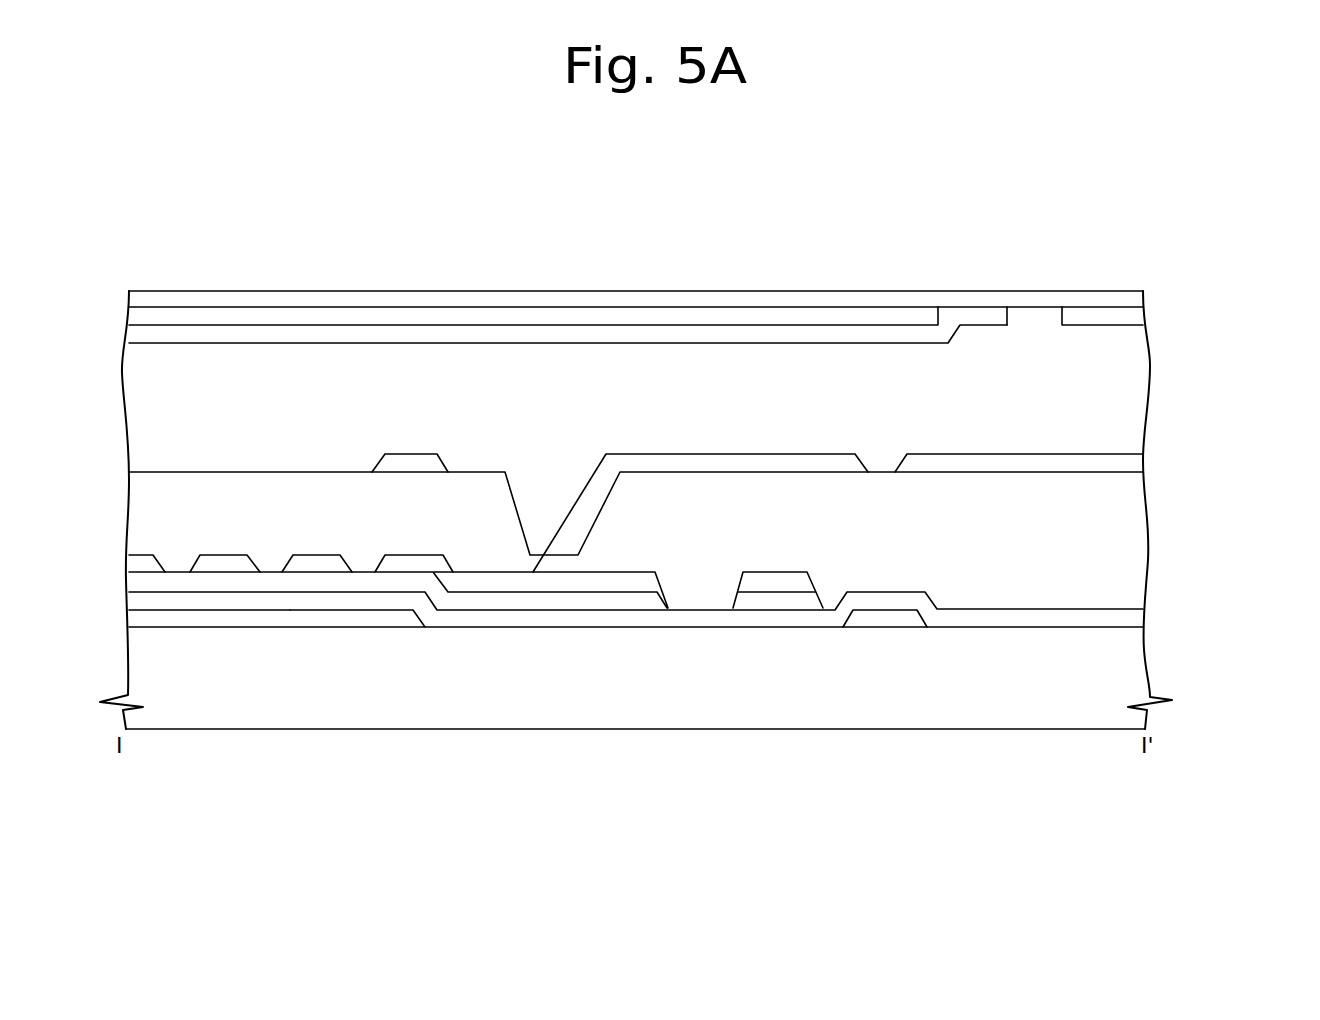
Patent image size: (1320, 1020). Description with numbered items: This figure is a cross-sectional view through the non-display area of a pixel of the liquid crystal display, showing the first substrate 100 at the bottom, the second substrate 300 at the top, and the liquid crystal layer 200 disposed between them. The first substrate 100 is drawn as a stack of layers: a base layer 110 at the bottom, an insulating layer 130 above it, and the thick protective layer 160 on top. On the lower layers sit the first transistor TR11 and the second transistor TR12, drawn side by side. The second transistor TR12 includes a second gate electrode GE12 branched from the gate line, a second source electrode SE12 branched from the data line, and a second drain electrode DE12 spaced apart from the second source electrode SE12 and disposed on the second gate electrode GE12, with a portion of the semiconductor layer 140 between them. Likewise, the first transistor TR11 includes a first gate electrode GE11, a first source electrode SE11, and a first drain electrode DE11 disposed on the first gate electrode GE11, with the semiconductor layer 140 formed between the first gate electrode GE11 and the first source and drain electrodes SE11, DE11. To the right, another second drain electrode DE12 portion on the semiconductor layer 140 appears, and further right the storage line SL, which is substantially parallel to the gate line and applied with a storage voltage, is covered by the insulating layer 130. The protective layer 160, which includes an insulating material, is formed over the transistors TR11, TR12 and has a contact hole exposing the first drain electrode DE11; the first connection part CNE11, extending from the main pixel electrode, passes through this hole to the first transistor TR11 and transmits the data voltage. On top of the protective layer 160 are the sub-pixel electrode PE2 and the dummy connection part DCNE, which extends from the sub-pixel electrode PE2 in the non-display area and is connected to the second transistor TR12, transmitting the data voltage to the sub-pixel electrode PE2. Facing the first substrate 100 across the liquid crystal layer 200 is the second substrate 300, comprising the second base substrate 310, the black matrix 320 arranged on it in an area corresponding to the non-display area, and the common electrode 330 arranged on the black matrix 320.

The second base substrate 310 is at (1128, 300).
The black matrix 320 is at (1128, 317).
The common electrode 330 is at (943, 333).
The second substrate 300 is at (714, 333).
The liquid crystal layer 200 is at (1128, 412).
The sub-pixel electrode PE2 is at (1128, 463).
The dummy connection part DCNE is at (415, 465).
The first connection part CNE11 is at (723, 465).
The protective layer 160 is at (1128, 545).
The gate insulating layer 130 is at (1128, 617).
The first base substrate 110 is at (681, 678).
The first substrate 100 is at (713, 600).
The semiconductor layer 140 is at (608, 600).
The storage line SL is at (898, 622).
The second source electrode SE12 is at (145, 567).
The second drain electrode DE12 is at (823, 757).
The second gate electrode GE12 is at (294, 615).
The second transistor TR12 is at (489, 693).
The first source electrode SE11 is at (320, 567).
The first gate electrode GE11 is at (402, 620).
The first drain electrode DE11 is at (425, 567).
The first transistor TR11 is at (422, 693).